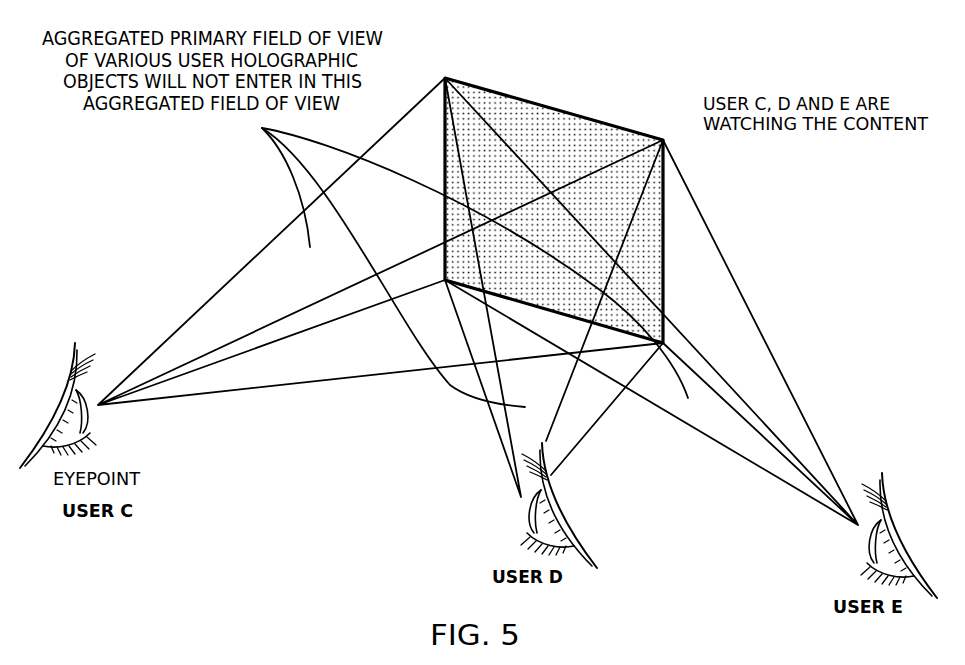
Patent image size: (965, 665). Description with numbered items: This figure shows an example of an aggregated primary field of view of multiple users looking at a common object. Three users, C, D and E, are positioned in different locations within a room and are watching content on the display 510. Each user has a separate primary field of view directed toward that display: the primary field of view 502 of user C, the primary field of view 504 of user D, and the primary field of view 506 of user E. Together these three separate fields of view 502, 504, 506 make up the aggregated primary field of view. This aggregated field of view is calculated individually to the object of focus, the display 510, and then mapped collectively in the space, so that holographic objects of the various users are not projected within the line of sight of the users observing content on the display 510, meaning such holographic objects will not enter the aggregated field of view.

The primary field of view 502 is at (250, 250).
The primary field of view 504 is at (490, 428).
The primary field of view 506 is at (783, 350).
The display 510 is at (607, 138).